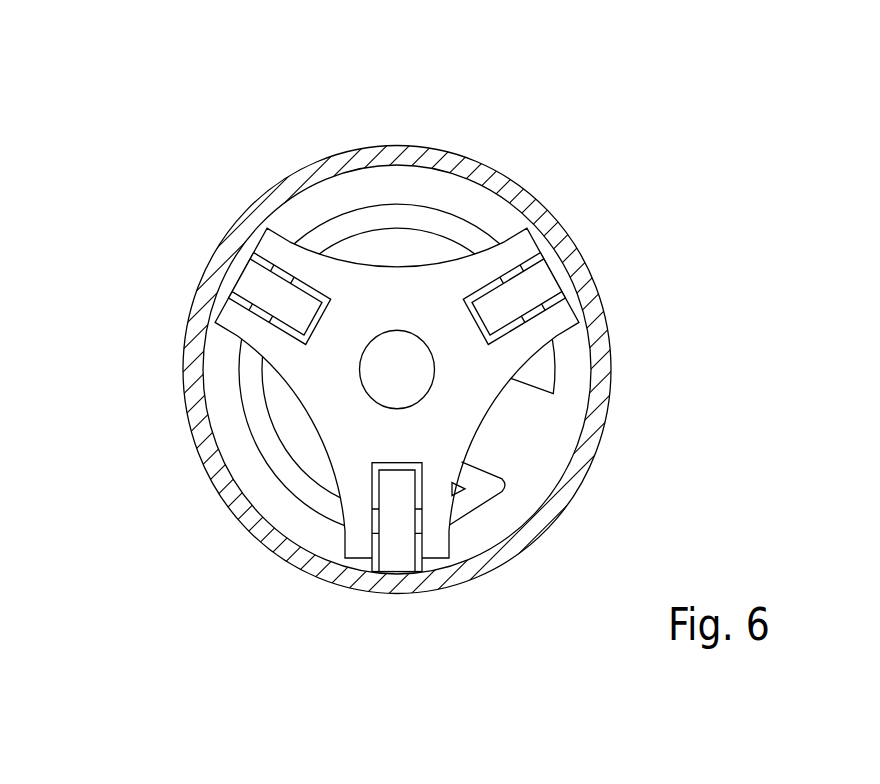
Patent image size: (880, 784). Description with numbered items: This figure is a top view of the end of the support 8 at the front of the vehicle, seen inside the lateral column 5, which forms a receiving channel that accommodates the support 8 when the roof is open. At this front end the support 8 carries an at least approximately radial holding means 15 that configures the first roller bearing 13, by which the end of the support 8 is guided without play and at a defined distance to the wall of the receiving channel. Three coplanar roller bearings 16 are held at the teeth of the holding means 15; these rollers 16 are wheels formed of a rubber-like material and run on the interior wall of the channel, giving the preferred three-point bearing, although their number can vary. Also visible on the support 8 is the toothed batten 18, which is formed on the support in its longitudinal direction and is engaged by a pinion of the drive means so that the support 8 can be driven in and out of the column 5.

The lateral column 5 is at (508, 192).
The support 8 is at (428, 230).
The first roller bearing 13 is at (306, 424).
The holding means 15 is at (465, 383).
The roller bearings 16 is at (536, 288).
The toothed batten 18 is at (484, 463).